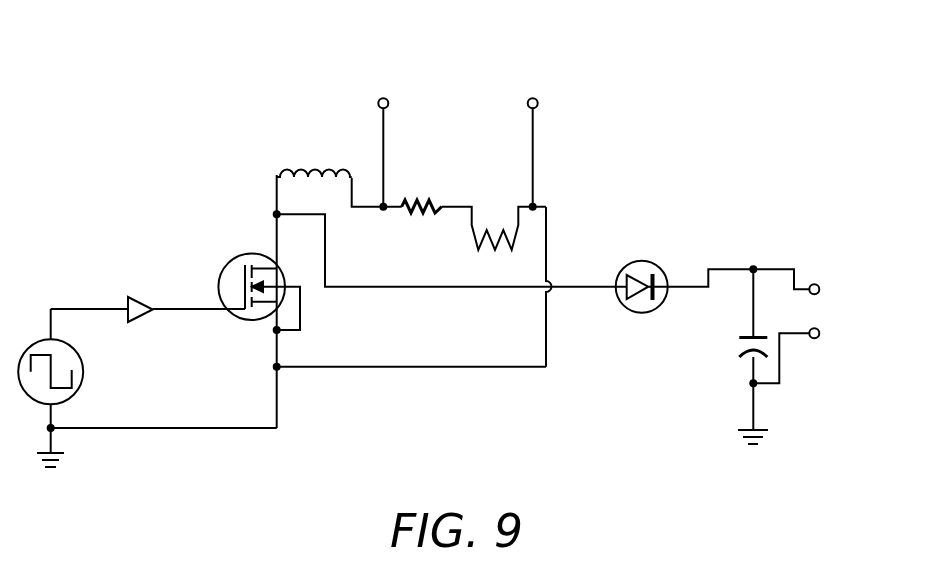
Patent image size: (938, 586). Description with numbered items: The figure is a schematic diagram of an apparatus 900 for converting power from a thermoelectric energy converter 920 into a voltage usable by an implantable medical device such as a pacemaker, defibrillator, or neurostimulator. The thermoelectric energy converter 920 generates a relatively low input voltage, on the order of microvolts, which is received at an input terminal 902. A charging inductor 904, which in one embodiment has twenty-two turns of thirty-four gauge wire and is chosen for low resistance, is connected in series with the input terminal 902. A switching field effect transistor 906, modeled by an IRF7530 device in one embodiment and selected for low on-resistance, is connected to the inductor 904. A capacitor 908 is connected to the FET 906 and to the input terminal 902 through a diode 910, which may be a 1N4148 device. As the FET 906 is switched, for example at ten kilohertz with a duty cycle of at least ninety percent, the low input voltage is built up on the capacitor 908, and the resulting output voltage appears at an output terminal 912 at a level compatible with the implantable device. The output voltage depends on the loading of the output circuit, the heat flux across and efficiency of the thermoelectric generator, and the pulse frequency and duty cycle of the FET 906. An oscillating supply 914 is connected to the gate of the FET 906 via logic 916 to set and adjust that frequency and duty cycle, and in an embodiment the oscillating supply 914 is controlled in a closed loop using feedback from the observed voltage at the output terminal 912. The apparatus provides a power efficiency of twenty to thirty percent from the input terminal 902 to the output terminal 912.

The apparatus 900 is at (712, 72).
The input terminal 902 is at (533, 72).
The charging inductor 904 is at (278, 172).
The switching Field Effect Transistor 906 is at (252, 322).
The capacitor 908 is at (728, 370).
The diode 910 is at (643, 259).
The output terminal 912 is at (833, 283).
The oscillating supply 914 is at (33, 340).
The logic 916 is at (143, 292).
The thermoelectric energy converter 920 is at (436, 140).